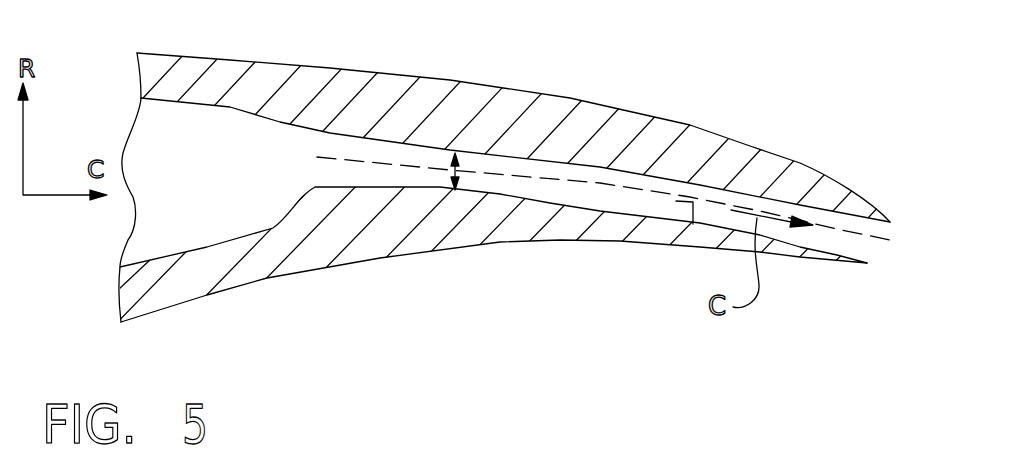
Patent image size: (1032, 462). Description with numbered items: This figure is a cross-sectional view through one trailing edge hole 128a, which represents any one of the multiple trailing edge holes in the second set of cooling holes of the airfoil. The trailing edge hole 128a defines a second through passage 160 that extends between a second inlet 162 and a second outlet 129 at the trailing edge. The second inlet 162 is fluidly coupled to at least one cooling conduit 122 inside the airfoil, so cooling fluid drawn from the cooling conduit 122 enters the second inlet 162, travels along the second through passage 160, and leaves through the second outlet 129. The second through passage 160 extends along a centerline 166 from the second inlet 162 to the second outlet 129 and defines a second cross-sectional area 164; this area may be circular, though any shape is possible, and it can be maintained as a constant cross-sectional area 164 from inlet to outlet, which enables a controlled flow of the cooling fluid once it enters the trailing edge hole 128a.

The cooling conduit 122 is at (190, 188).
The trailing edge hole 128a is at (745, 175).
The second outlet 129 is at (887, 234).
The second through passage 160 is at (582, 175).
The second inlet 162 is at (317, 153).
The second cross-sectional area 164 is at (462, 173).
The centerline 166 is at (677, 257).